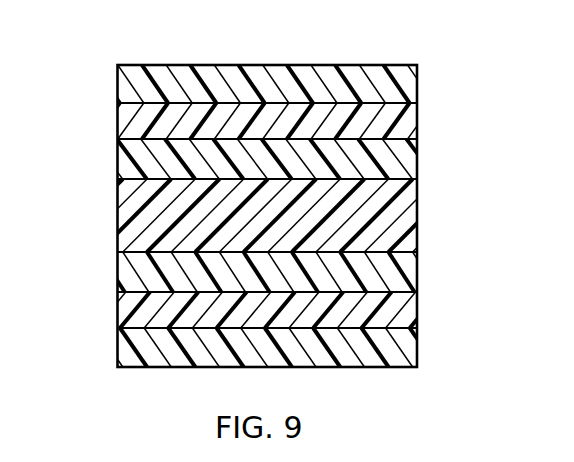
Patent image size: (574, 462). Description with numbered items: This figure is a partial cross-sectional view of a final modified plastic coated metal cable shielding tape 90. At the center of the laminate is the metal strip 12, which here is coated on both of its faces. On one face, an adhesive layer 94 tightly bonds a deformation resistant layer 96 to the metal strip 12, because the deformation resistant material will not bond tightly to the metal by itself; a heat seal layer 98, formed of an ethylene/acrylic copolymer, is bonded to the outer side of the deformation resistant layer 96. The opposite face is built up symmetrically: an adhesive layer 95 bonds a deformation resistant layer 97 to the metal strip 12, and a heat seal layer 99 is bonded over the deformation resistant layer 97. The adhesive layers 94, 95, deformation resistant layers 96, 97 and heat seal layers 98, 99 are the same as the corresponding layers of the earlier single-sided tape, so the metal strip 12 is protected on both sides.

The cable shielding tape 90 is at (149, 55).
The heat seal layer 98 is at (283, 85).
The deformation resistant layer 96 is at (243, 122).
The adhesive layer 94 is at (283, 166).
The metal strip 12 is at (56, 216).
The adhesive layer 95 is at (289, 274).
The deformation resistant layer 97 is at (246, 315).
The heat seal layer 99 is at (289, 348).